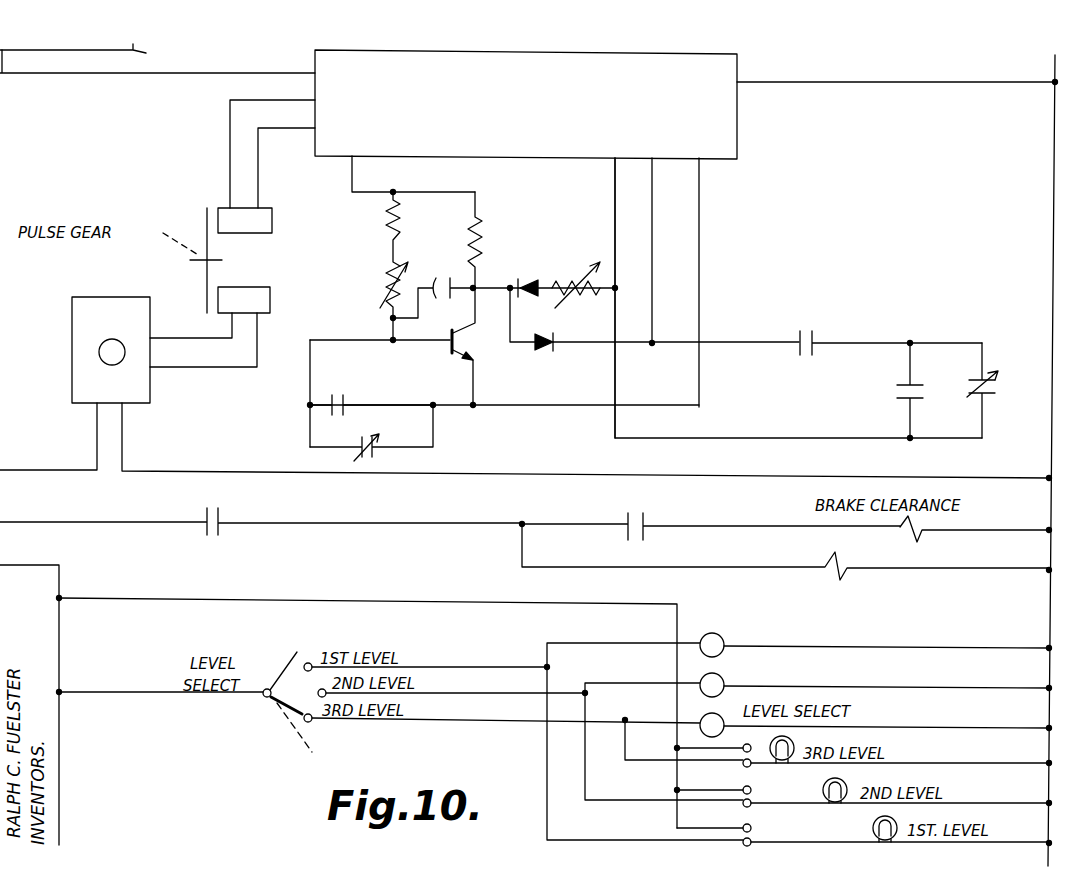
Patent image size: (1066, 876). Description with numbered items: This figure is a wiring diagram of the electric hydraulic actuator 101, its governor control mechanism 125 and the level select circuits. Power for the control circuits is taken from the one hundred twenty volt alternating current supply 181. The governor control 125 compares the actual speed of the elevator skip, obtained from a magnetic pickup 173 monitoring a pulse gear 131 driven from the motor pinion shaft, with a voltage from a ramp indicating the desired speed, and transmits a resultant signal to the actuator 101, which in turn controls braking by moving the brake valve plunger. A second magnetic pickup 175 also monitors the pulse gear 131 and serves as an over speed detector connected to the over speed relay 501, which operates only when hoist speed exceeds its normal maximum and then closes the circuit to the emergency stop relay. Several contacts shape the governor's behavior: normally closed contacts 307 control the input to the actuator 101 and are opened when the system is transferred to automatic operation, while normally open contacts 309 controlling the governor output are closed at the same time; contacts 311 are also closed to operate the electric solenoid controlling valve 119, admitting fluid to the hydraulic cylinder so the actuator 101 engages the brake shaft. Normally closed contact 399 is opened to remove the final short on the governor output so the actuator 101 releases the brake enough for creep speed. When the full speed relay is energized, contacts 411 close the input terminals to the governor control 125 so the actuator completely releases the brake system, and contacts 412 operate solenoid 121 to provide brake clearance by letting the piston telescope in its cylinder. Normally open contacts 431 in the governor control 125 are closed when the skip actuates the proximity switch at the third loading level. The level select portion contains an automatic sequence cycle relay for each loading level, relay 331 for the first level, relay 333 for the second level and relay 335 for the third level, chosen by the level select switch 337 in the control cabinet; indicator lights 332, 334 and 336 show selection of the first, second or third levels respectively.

The 120 volt alternating current supply 181 is at (157, 58).
The electric hydraulic actuator 101 is at (526, 104).
The pulse gear 131 is at (207, 214).
The magnetic pickup 173 is at (272, 223).
The magnetic pickup (over speed detector) 175 is at (270, 301).
The over speed relay 501 is at (99, 352).
The contacts 411 is at (341, 396).
The normally closed contacts 307 is at (370, 440).
The governor control mechanism 125 is at (713, 292).
The normally open contacts 309 is at (812, 331).
The normally open contacts 431 is at (896, 393).
The normally closed contact 399 is at (1000, 385).
The contacts 311 is at (213, 538).
The contacts 412 is at (640, 512).
The solenoid 121 is at (906, 542).
The electric solenoid controlling valve 119 is at (830, 575).
The automatic sequence cycle relay (first level) 331 is at (722, 637).
The automatic sequence cycle relay (second level) 333 is at (722, 678).
The automatic sequence cycle relay (third level) 335 is at (702, 720).
The indicator light 336 is at (770, 741).
The level select switch 337 is at (281, 713).
The indicator light 334 is at (822, 790).
The indicator light 332 is at (872, 828).